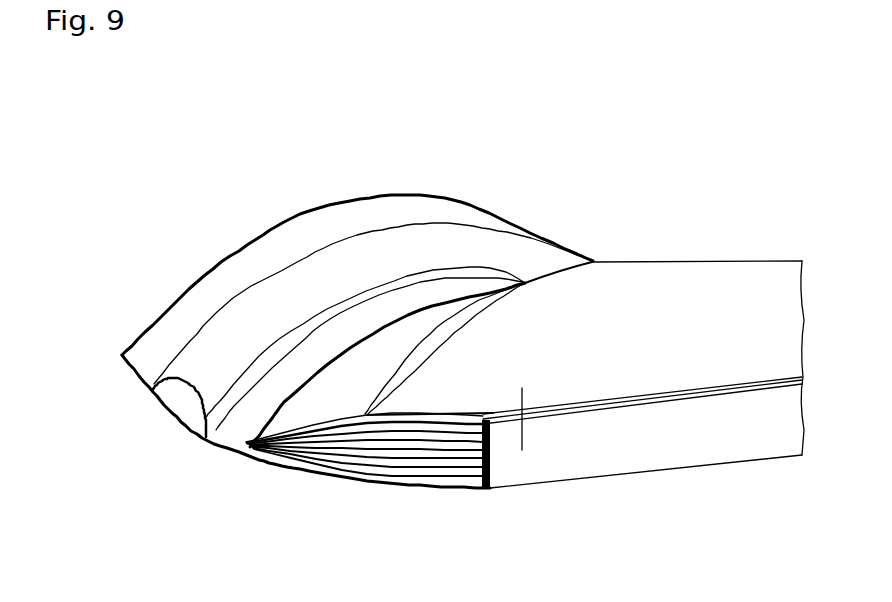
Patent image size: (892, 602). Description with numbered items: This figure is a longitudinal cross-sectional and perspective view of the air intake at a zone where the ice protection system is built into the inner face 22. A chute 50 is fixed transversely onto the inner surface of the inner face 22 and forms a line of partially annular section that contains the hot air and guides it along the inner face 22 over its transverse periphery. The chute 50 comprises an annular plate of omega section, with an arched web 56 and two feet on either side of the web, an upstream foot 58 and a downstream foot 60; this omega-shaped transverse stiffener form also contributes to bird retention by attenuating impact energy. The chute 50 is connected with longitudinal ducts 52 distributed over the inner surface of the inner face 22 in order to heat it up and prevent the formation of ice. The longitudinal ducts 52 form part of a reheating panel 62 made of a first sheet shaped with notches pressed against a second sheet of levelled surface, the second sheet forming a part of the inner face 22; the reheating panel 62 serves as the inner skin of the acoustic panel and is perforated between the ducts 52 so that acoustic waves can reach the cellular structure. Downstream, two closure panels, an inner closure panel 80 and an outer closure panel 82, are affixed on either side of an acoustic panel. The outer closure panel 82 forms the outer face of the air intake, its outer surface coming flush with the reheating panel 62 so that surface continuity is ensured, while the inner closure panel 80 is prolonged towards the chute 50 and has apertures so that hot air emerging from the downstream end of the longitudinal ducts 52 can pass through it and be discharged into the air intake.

The inner face 22 is at (694, 463).
The chute 50 is at (195, 372).
The longitudinal ducts 52 is at (442, 470).
The arched web 56 is at (230, 345).
The upstream foot 58 is at (151, 356).
The downstream foot 60 is at (242, 413).
The reheating panel 62 is at (350, 462).
The inner closure panel 80 is at (509, 382).
The outer closure panel 82 is at (590, 450).